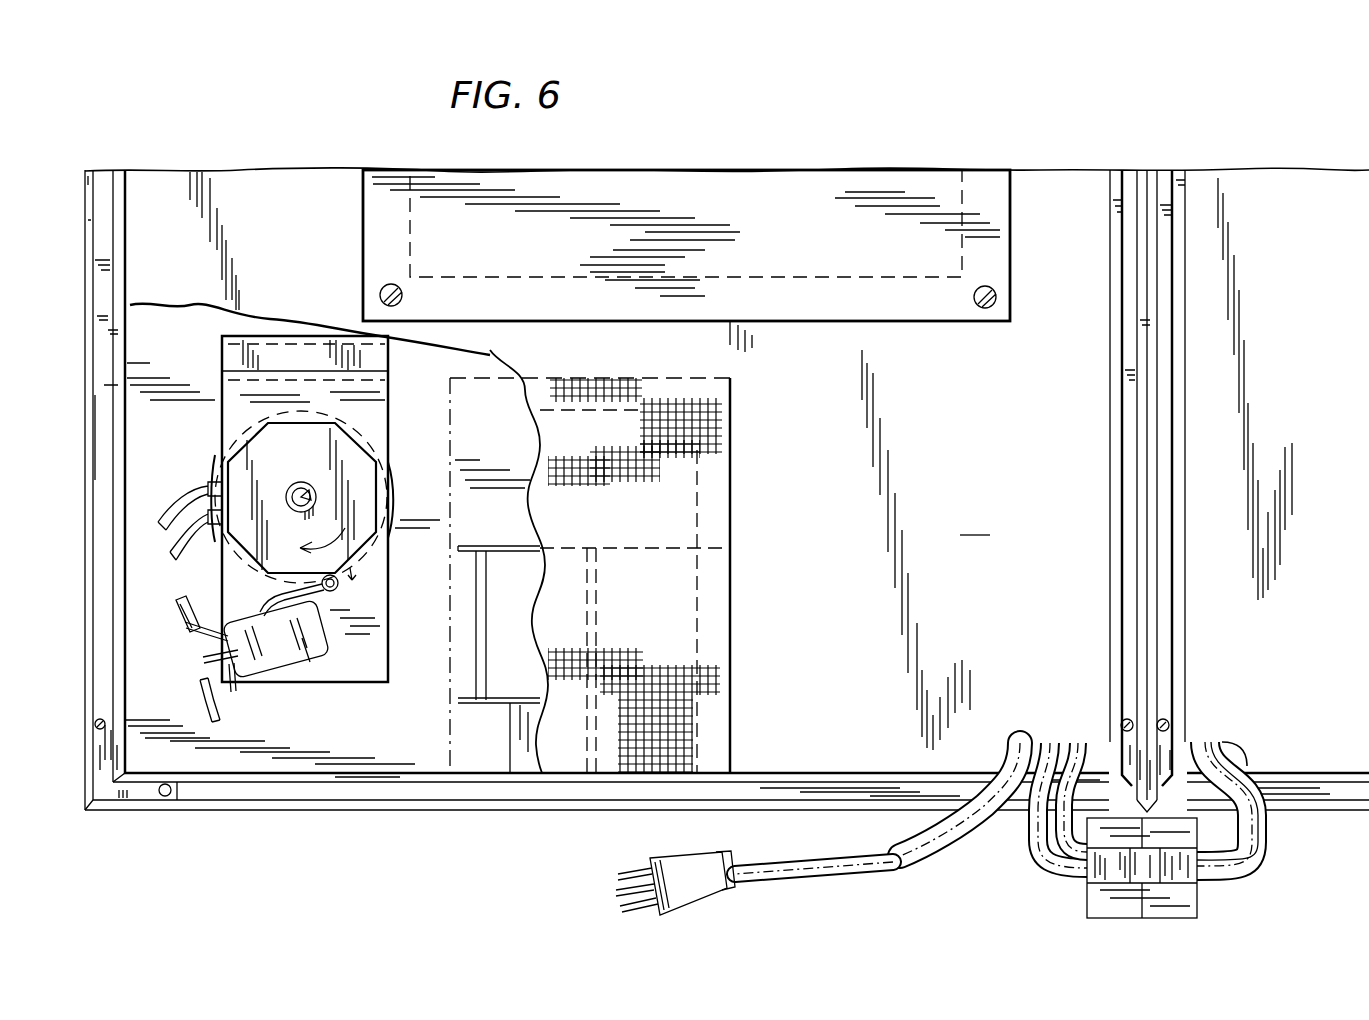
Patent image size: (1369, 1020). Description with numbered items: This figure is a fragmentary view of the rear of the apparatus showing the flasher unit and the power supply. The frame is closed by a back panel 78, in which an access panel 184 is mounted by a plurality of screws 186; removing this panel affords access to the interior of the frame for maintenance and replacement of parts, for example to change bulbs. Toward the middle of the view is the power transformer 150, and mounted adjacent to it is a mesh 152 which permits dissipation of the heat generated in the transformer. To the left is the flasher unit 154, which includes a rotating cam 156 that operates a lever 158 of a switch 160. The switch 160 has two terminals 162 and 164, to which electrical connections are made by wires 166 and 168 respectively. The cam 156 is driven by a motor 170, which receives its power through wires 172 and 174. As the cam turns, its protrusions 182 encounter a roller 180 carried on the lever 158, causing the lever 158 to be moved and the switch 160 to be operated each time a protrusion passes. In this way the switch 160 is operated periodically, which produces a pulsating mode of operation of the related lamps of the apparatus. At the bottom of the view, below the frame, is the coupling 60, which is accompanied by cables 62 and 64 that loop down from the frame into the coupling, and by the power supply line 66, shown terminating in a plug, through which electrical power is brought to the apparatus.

The back panel 78 is at (727, 489).
The access panel 184 is at (823, 152).
The screws 186 is at (988, 308).
The cable 62 is at (1244, 872).
The cable 64 is at (1078, 880).
The power supply line 66 is at (843, 866).
The coupling 60 is at (1200, 908).
The mesh 152 is at (732, 474).
The power transformer 150 is at (470, 677).
The flasher unit 154 is at (430, 400).
The motor 170 is at (235, 410).
The rotating cam 156 is at (252, 462).
The protrusions 182 is at (366, 406).
The wire 172 is at (185, 485).
The wire 174 is at (182, 538).
The roller 180 is at (345, 590).
The lever 158 is at (282, 600).
The switch 160 is at (312, 654).
The terminal 162 is at (222, 626).
The wire 166 is at (188, 628).
The wire 168 is at (206, 702).
The terminal 164 is at (232, 690).